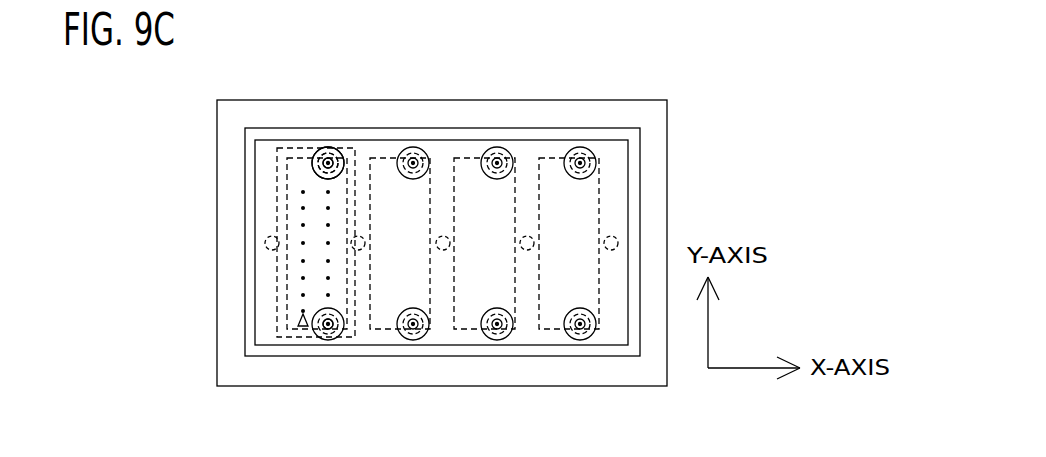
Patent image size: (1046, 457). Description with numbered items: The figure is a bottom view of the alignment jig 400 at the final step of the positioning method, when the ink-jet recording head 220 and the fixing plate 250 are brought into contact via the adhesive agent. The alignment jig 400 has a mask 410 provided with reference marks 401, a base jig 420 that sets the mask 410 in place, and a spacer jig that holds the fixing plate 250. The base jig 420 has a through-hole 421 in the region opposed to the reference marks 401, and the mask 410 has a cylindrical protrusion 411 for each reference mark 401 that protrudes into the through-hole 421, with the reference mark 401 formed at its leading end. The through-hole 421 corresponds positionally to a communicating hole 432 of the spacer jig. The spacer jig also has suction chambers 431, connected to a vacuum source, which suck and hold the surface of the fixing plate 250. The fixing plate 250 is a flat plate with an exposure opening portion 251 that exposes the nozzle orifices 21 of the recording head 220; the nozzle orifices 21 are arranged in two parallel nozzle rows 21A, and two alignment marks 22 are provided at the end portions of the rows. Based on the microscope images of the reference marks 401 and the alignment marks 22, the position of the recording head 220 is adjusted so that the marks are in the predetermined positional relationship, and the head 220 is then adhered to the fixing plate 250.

The alignment jig 400 is at (666, 80).
The base jig 420 is at (603, 123).
The mask 410 is at (527, 160).
The ink-jet recording head 220 is at (353, 152).
The protrusion 411 is at (280, 163).
The fixing plate 250 is at (285, 314).
The exposure opening portion 251 is at (455, 185).
The reference mark 401 is at (323, 151).
The alignment mark 22 is at (332, 151).
The through-hole 421 is at (347, 149).
The communicating hole 432 is at (312, 153).
The nozzle orifice 21 is at (302, 176).
The nozzle row 21A is at (303, 328).
The suction chamber 431 is at (263, 255).